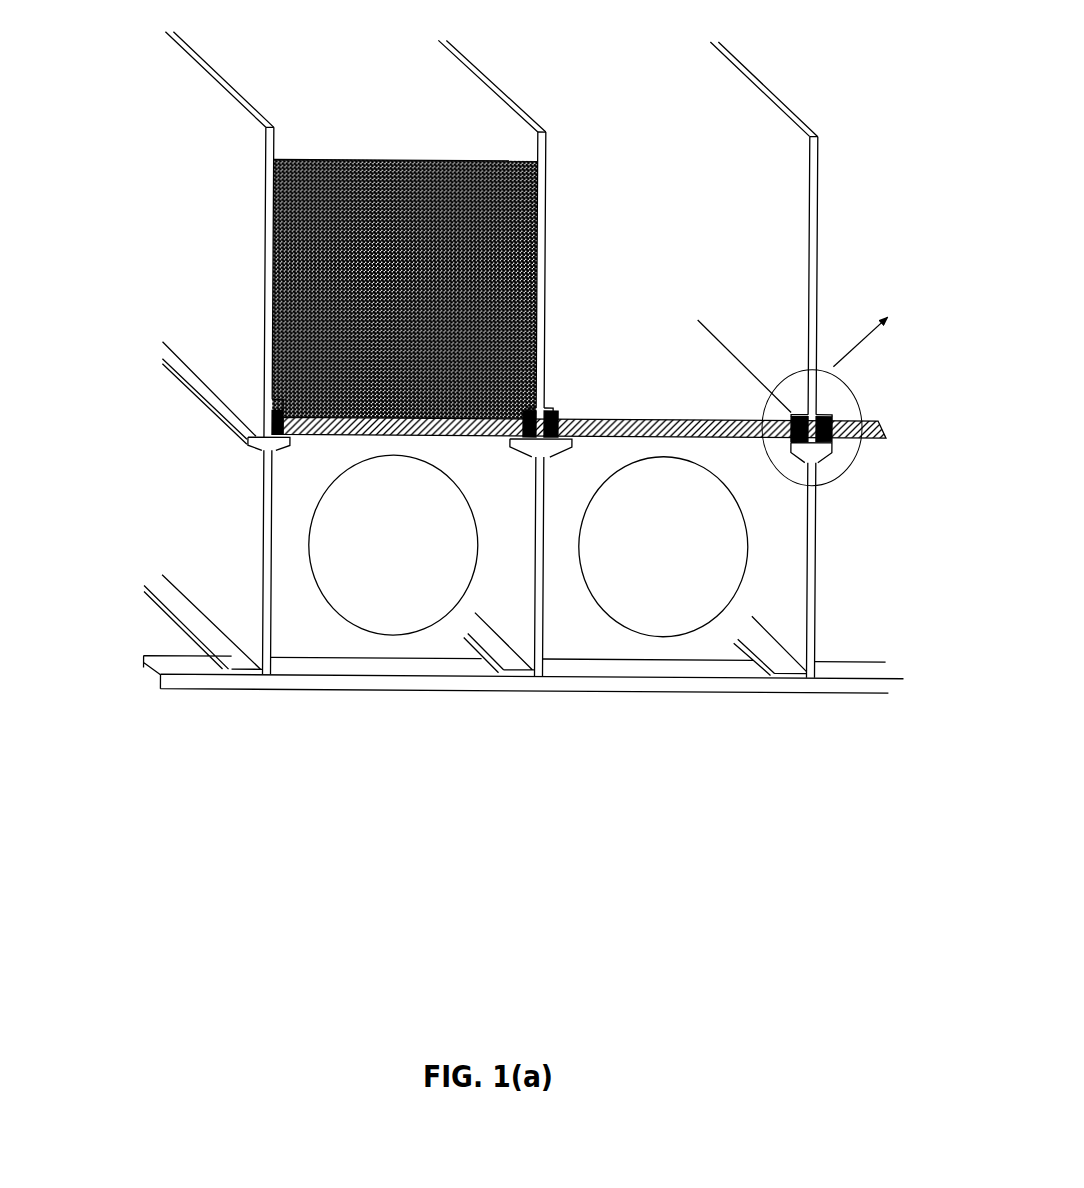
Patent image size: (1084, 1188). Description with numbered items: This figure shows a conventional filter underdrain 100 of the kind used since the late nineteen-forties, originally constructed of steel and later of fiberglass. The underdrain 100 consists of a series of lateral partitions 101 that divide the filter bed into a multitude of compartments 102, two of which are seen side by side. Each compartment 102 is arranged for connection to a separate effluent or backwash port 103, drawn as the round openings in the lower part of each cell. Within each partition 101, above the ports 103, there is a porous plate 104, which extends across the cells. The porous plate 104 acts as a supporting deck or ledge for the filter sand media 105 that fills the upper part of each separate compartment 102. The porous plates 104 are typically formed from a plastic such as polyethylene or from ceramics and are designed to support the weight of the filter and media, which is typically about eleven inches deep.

The conventional filter underdrain 100 is at (158, 233).
The lateral partition 101 is at (815, 158).
The compartment 102 is at (690, 215).
The effluent or backwash port 103 is at (345, 553).
The porous plate 104 is at (655, 418).
The filter sand media 105 is at (413, 250).